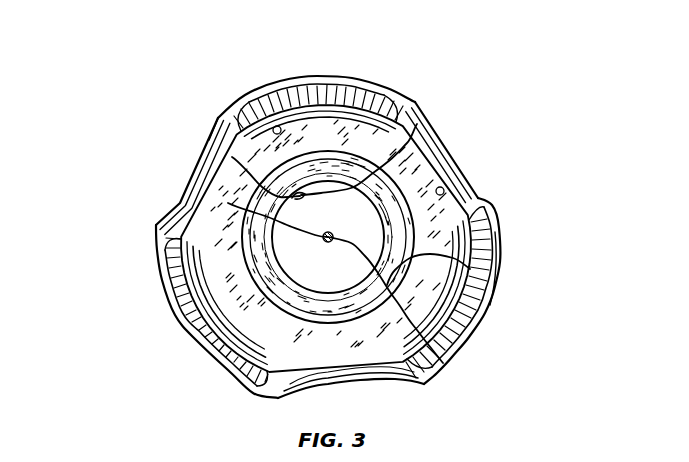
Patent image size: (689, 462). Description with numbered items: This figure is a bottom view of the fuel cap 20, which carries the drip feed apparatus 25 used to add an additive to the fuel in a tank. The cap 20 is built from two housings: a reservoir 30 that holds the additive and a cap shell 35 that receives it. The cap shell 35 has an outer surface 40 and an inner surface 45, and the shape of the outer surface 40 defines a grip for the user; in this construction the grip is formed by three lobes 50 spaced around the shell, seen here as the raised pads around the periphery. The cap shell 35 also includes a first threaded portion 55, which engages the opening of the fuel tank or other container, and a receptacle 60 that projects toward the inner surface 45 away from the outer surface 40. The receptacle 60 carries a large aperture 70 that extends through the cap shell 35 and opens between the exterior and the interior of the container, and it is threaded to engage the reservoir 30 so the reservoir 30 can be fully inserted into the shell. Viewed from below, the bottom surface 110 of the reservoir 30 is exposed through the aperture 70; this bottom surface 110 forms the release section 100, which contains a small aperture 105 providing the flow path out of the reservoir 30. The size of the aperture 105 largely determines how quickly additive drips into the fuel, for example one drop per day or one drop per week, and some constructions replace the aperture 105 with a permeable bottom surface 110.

The cap 20 is at (108, 89).
The drip feed apparatus 25 is at (444, 157).
The reservoir 30 is at (417, 124).
The cap shell 35 is at (502, 222).
The outer surface 40 is at (217, 121).
The inner surface 45 is at (443, 189).
The lobes 50 is at (318, 78).
The first threaded portion 55 is at (282, 118).
The receptacle 60 is at (470, 269).
The aperture 70 is at (232, 157).
The release section 100 is at (443, 363).
The aperture 105 is at (228, 203).
The bottom surface 110 is at (268, 381).